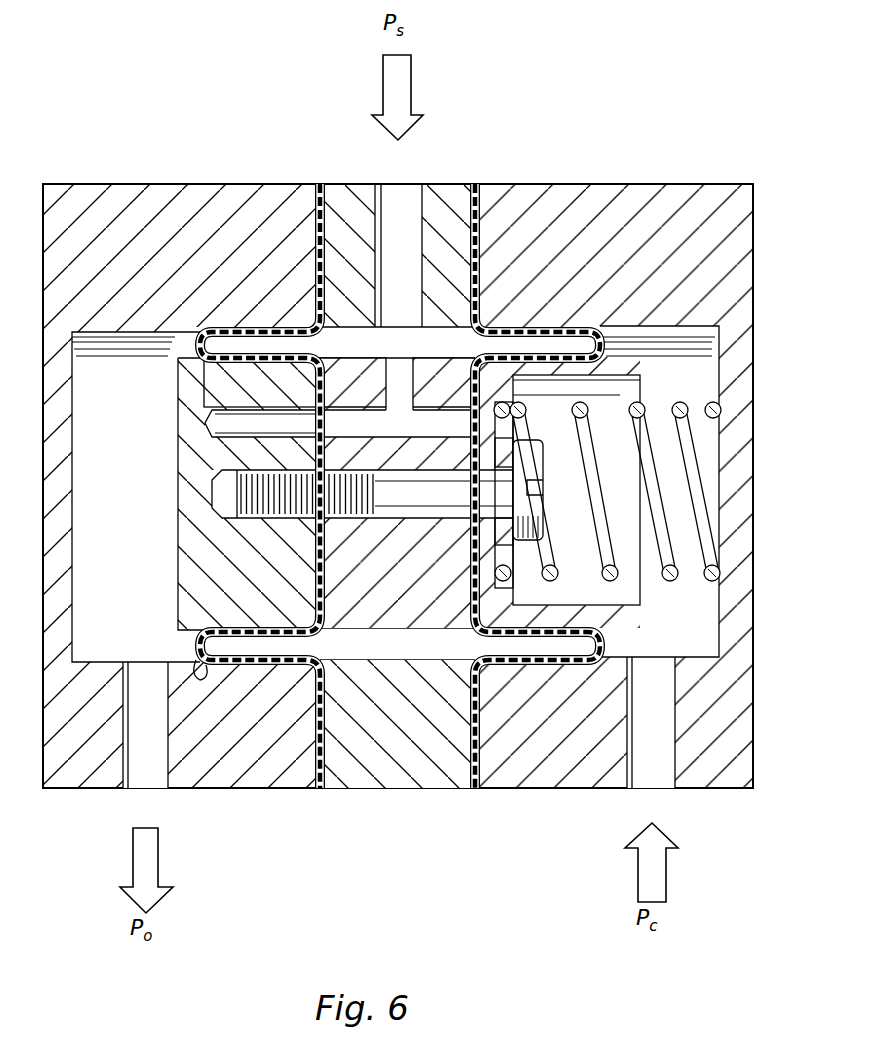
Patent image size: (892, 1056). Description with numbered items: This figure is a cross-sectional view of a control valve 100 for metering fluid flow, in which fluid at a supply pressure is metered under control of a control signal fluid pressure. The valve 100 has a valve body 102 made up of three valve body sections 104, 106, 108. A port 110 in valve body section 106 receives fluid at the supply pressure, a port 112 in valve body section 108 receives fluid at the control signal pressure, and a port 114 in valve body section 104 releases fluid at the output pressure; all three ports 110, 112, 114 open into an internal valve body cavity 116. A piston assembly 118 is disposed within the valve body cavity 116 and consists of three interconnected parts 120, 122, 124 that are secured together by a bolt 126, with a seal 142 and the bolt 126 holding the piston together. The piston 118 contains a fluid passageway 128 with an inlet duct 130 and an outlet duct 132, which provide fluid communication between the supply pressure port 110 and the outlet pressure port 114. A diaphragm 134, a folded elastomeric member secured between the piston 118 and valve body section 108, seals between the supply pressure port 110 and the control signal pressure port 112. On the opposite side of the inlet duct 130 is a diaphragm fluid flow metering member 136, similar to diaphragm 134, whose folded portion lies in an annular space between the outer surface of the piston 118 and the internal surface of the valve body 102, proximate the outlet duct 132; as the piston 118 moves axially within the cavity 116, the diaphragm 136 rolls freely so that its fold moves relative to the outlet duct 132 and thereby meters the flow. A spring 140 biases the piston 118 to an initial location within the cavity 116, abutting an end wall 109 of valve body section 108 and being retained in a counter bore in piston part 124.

The valve 100 is at (478, 165).
The valve body 102 is at (176, 200).
The valve body section 104 is at (100, 205).
The valve body section 106 is at (450, 195).
The valve body section 108 is at (612, 195).
The end wall 109 is at (722, 609).
The port 110 is at (395, 190).
The port 112 is at (655, 768).
The port 114 is at (155, 778).
The valve body cavity 116 is at (140, 513).
The piston assembly 118 is at (365, 665).
The piston part 120 is at (195, 556).
The piston part 122 is at (390, 600).
The piston part 124 is at (628, 626).
The bolt 126 is at (535, 478).
The fluid passageway 128 is at (230, 427).
The inlet duct 130 is at (405, 400).
The outlet duct 132 is at (203, 386).
The diaphragm 134 is at (522, 662).
The diaphragm fluid flow metering member 136 is at (195, 665).
The spring 140 is at (705, 521).
The seal 142 is at (516, 457).